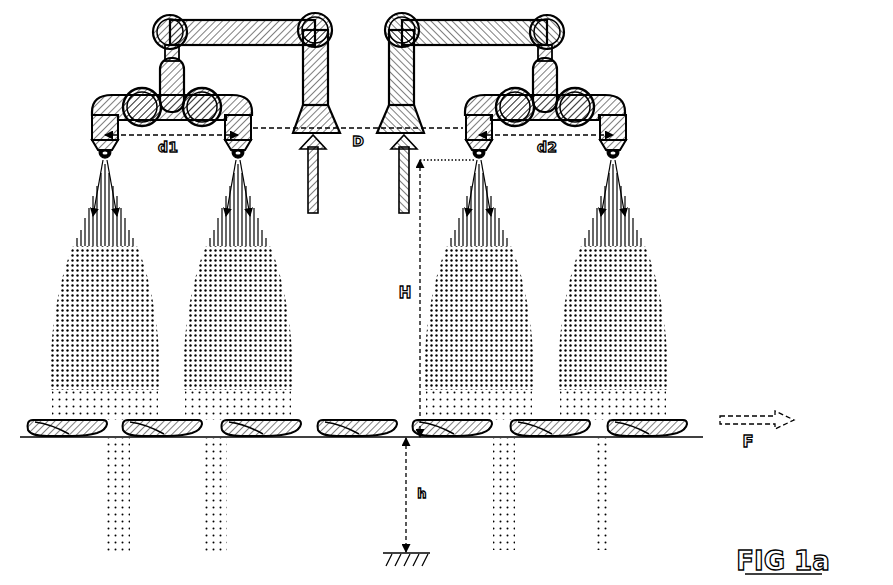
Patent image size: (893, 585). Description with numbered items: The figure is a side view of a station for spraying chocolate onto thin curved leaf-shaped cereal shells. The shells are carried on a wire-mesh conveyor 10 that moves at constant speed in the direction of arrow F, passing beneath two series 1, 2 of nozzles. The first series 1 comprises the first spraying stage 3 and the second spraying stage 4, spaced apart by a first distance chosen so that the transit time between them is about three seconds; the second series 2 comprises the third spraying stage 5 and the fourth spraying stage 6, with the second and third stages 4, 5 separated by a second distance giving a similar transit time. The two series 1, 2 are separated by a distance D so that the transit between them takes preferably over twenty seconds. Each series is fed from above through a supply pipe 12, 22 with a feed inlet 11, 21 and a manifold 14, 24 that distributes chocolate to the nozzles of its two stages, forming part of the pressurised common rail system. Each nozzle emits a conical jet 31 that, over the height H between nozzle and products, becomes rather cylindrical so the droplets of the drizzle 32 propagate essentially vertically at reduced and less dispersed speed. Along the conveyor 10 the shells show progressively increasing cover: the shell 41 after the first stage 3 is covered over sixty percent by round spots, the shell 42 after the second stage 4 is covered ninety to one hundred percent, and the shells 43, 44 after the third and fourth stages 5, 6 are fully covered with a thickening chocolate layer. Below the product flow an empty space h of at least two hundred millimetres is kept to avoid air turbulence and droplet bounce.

The first series of spraying stages 1 is at (188, 100).
The second series of spraying stages 2 is at (527, 101).
The first spraying stage 3 is at (92, 128).
The second spraying stage 4 is at (253, 140).
The third spraying stage 5 is at (487, 147).
The fourth spraying stage 6 is at (626, 128).
The wire-mesh conveyor 10 is at (307, 438).
The liquid supply 11 is at (324, 199).
The supply pipe 12 is at (246, 37).
The manifold 14 is at (188, 120).
The liquid supply 21 is at (390, 199).
The supply pipe 22 is at (473, 37).
The manifold 24 is at (563, 120).
The conical jet 31 is at (632, 245).
The drizzle 32 is at (646, 323).
The shell after first stage 41 is at (167, 437).
The shell after second stage 42 is at (367, 437).
The shell after third stage 43 is at (550, 437).
The shell after fourth stage 44 is at (662, 435).